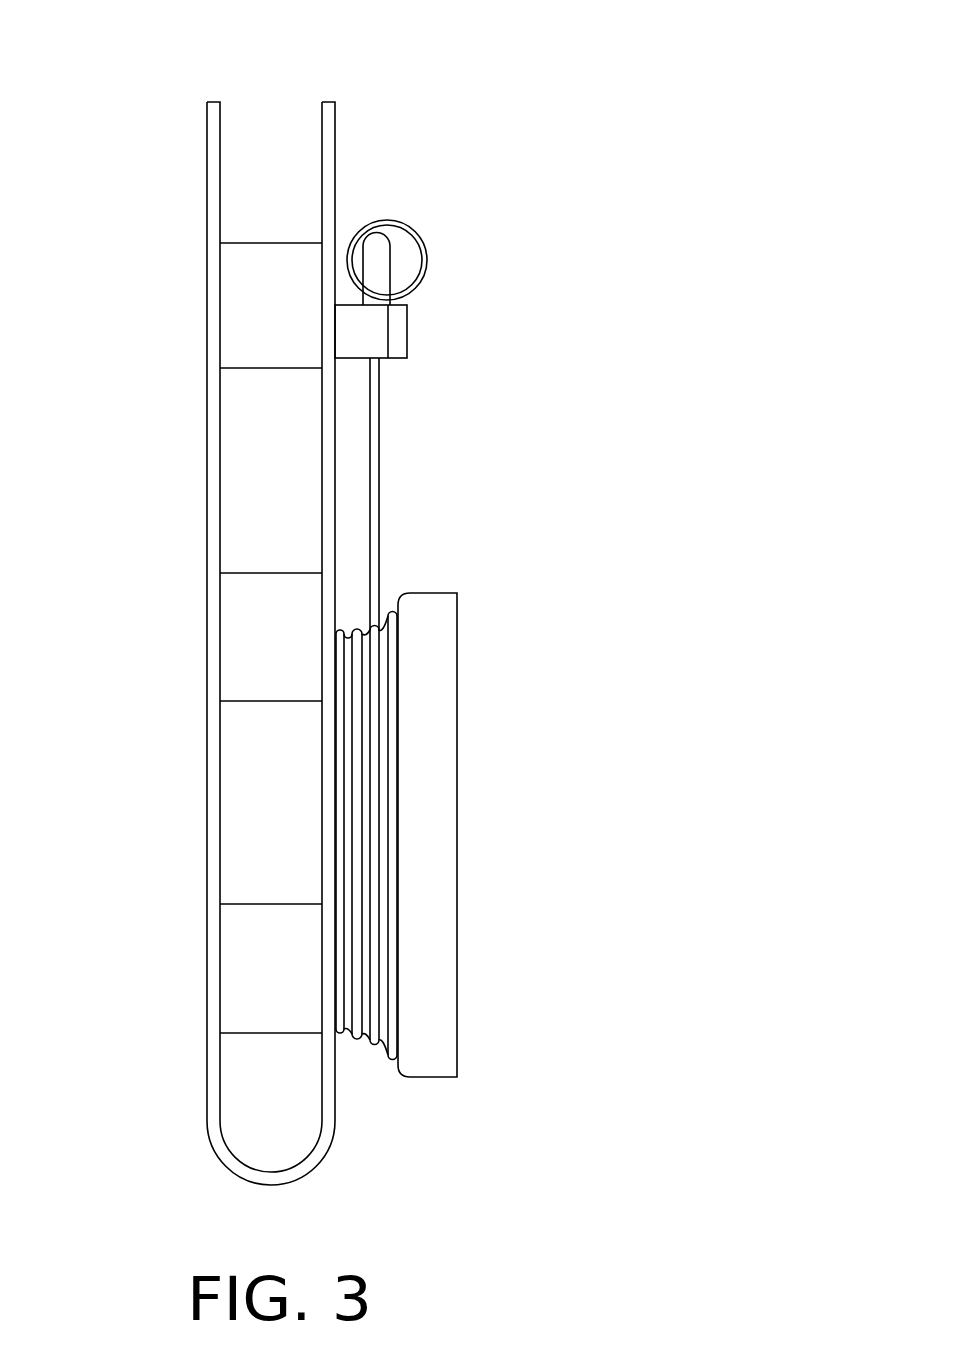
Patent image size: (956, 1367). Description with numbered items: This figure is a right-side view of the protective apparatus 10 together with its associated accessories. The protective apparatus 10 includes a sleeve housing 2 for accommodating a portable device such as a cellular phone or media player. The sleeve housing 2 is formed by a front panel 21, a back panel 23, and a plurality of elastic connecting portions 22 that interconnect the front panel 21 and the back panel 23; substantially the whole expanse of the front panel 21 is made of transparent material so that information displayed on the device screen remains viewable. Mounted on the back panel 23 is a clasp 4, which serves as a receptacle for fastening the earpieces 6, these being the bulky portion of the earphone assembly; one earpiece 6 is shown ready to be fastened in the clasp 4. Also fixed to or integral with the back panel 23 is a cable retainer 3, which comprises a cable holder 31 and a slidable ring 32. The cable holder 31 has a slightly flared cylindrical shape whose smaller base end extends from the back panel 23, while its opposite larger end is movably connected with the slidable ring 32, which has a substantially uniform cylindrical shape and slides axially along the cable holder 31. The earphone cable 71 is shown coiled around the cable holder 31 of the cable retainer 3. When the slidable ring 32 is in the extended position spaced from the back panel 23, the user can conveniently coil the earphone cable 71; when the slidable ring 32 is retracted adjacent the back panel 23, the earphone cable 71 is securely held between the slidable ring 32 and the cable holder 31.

The protective apparatus 10 is at (315, 28).
The sleeve housing 2 is at (192, 652).
The front panel 21 is at (210, 292).
The elastic connecting portions 22 is at (252, 966).
The back panel 23 is at (330, 148).
The earpieces 6 is at (428, 221).
The clasp 4 is at (373, 324).
The earphone cable 71 is at (388, 612).
The cable retainer 3 is at (583, 980).
The cable holder 31 is at (345, 1035).
The slidable ring 32 is at (427, 1017).